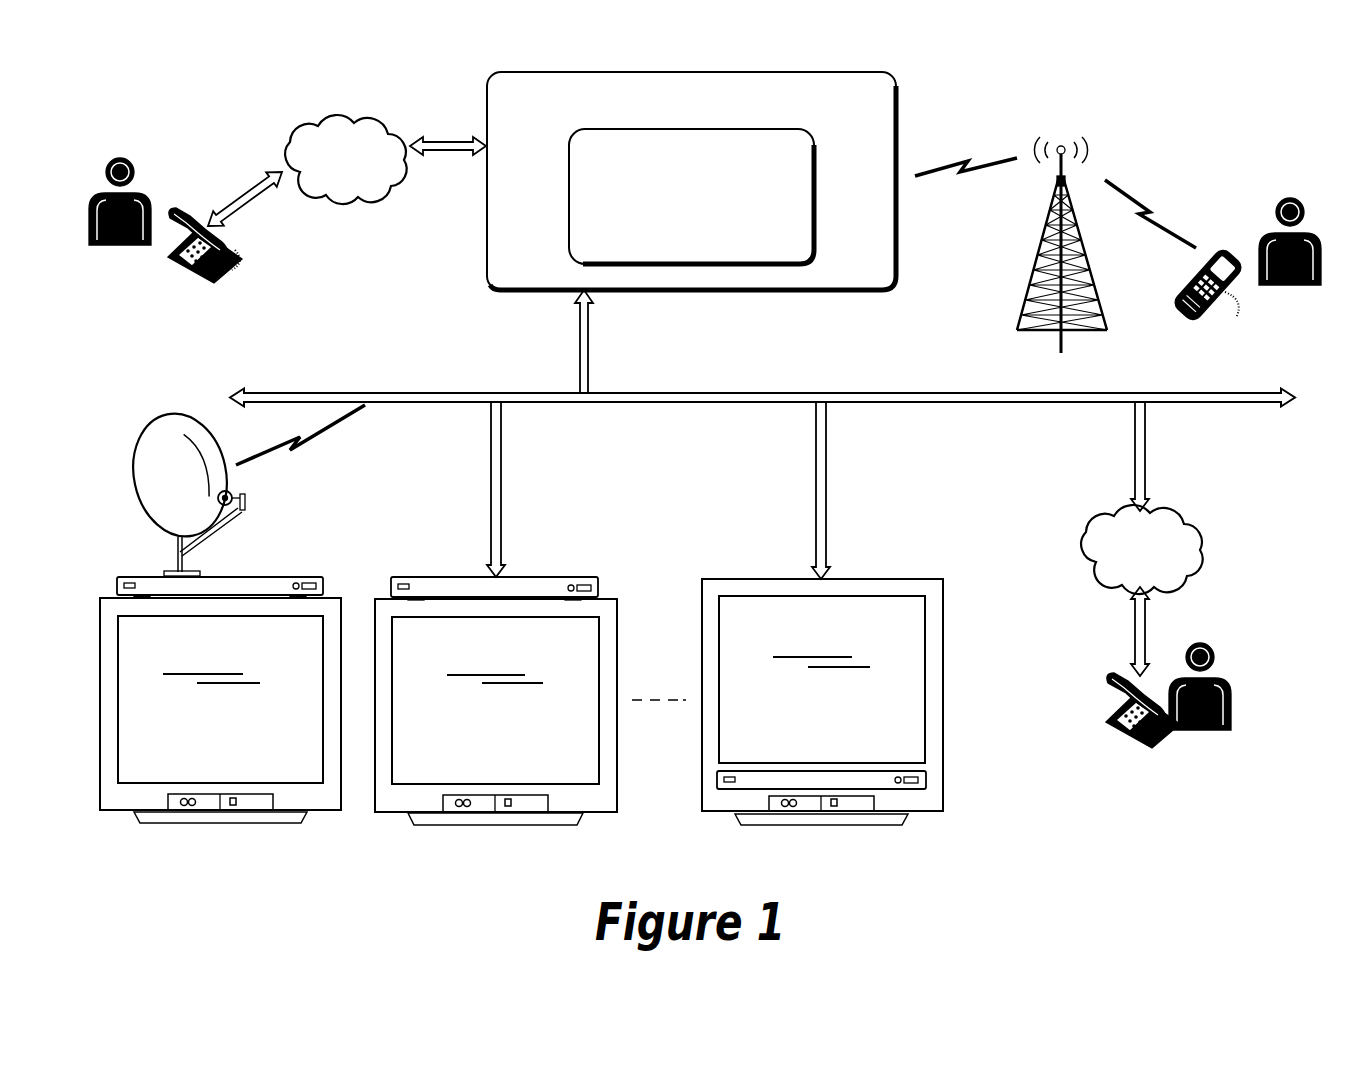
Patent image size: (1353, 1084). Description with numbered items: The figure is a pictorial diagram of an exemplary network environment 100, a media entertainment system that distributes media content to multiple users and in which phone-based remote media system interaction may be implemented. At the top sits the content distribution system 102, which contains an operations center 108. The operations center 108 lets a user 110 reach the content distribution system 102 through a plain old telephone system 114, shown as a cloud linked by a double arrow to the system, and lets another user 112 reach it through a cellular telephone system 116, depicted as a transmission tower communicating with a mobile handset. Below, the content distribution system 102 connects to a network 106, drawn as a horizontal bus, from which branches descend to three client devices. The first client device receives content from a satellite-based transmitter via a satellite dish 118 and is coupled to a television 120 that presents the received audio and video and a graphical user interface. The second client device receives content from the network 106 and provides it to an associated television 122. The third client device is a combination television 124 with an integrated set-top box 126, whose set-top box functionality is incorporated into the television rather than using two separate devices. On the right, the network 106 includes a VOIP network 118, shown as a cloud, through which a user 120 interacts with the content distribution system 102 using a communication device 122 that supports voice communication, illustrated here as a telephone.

The network environment 100 is at (1130, 871).
The content distribution system 102 is at (691, 181).
The network 106 is at (708, 393).
The operations center 108 is at (691, 196).
The user 110 is at (122, 152).
The user 112 is at (1290, 197).
The plain old telephone system (POTS) 114 is at (306, 122).
The cellular telephone system 116 is at (1063, 148).
The VOIP network / satellite dish 118 is at (178, 413).
The user / television 120 is at (272, 811).
The communication device / television 122 is at (547, 812).
The television 124 is at (872, 811).
The integrated set-top box 126 is at (735, 780).